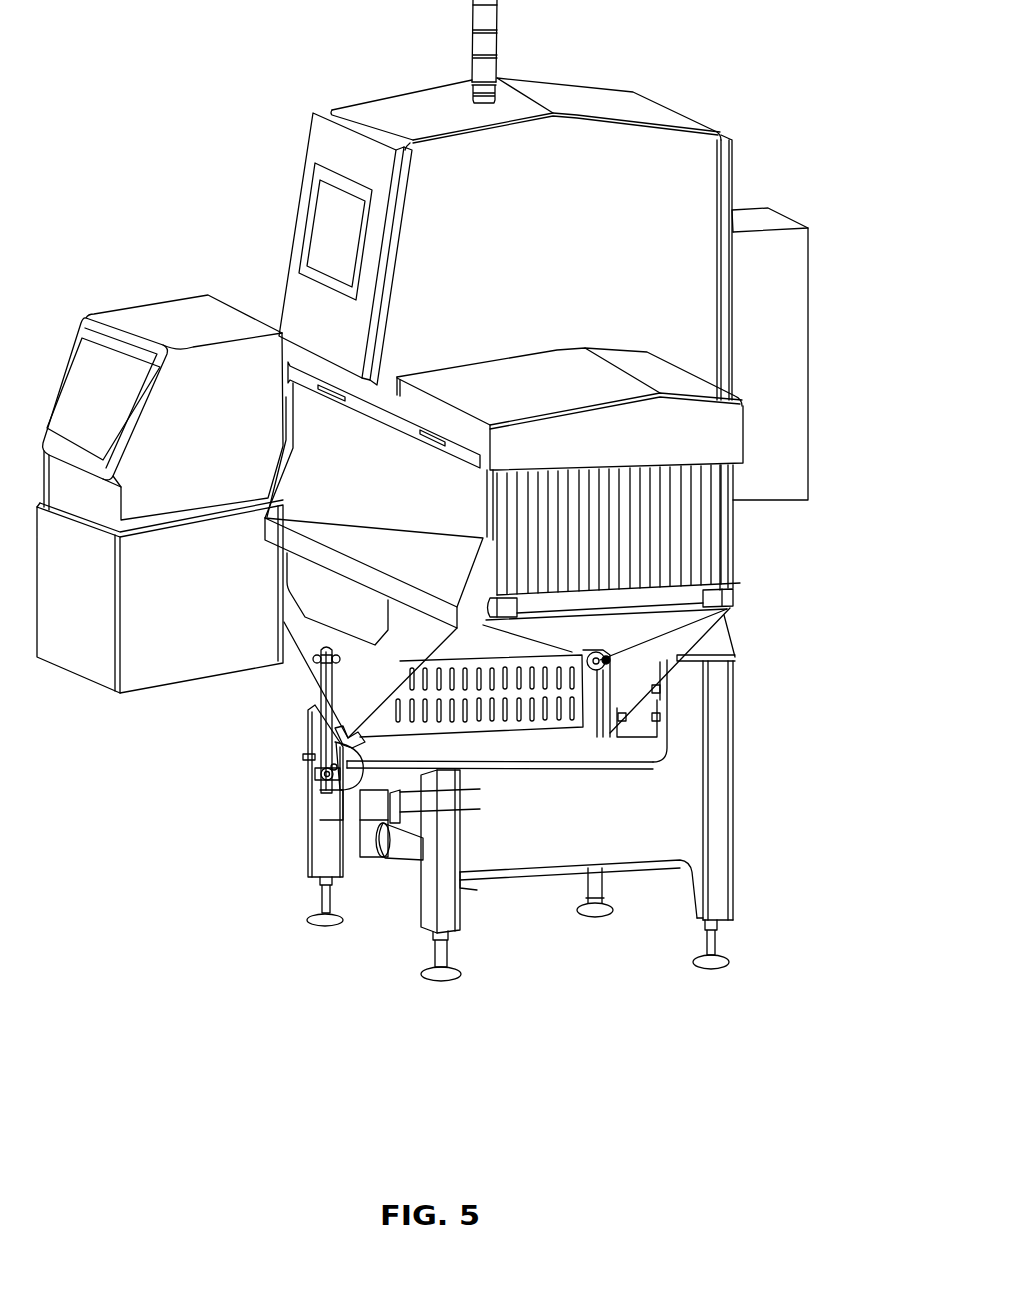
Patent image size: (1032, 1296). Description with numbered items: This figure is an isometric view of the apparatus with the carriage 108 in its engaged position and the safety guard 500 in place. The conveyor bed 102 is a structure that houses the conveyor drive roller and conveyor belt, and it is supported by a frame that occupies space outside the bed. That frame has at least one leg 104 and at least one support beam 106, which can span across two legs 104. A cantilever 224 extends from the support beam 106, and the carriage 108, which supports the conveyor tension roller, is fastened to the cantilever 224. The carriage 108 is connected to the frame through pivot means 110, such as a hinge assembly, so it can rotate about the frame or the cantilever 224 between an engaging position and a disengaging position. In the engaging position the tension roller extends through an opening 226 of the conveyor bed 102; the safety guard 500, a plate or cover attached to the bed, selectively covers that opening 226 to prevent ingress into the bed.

The conveyor bed 102 is at (380, 683).
The leg 104 is at (445, 907).
The support beam 106 is at (405, 843).
The carriage 108 is at (413, 767).
The pivot means 110 is at (317, 775).
The cantilever 224 is at (333, 807).
The opening 226 is at (553, 635).
The safety guard 500 is at (518, 688).